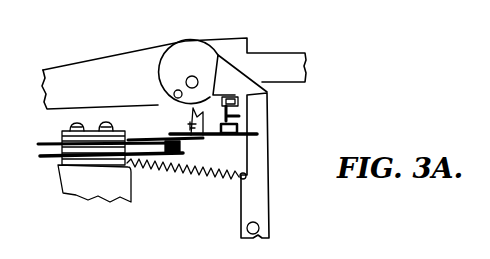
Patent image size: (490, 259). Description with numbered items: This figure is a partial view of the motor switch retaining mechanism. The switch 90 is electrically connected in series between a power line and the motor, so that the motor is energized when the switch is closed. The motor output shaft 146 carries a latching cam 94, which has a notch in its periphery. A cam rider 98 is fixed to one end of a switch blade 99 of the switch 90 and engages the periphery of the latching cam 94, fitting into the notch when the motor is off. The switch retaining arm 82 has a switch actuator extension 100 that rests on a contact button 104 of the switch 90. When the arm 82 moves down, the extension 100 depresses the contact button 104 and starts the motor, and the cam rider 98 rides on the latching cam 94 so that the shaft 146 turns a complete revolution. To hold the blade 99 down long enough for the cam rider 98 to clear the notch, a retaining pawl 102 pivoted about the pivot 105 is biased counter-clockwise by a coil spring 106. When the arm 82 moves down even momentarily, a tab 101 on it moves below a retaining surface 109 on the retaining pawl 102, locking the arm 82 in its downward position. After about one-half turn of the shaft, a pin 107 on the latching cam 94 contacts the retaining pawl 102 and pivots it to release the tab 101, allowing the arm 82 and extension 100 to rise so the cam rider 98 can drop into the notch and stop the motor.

The switch retaining arm 82 is at (108, 63).
The latching cam 94 is at (168, 72).
The output shaft 146 is at (195, 77).
The pin 107 is at (174, 95).
The tab 101 is at (214, 95).
The retaining pawl 102 is at (265, 99).
The pivot 105 is at (259, 226).
The retaining surface 109 is at (238, 103).
The switch actuator extension 100 is at (239, 116).
The contact button 104 is at (237, 128).
The switch blade 99 is at (213, 137).
The cam rider 98 is at (189, 127).
The switch 90 is at (139, 135).
The coil spring 106 is at (182, 180).